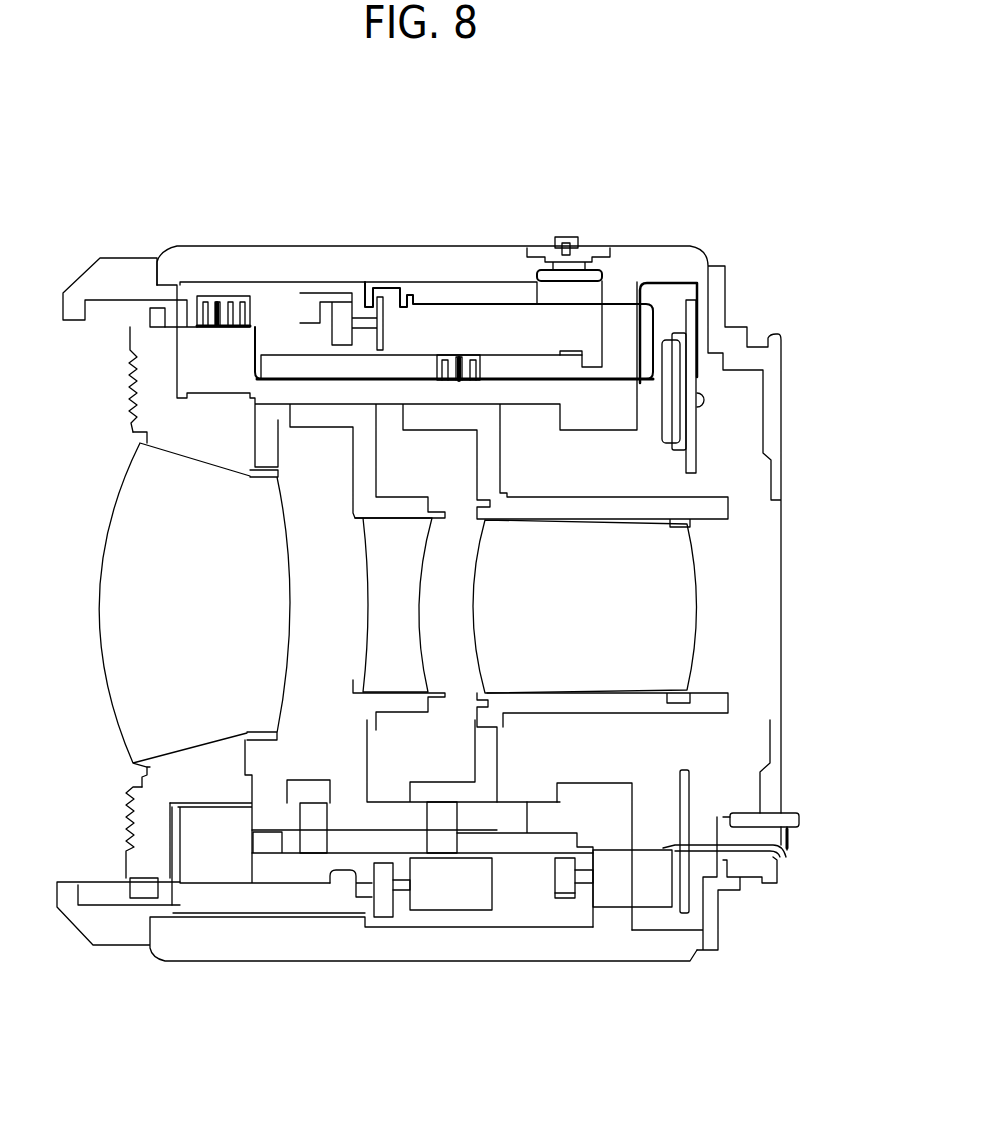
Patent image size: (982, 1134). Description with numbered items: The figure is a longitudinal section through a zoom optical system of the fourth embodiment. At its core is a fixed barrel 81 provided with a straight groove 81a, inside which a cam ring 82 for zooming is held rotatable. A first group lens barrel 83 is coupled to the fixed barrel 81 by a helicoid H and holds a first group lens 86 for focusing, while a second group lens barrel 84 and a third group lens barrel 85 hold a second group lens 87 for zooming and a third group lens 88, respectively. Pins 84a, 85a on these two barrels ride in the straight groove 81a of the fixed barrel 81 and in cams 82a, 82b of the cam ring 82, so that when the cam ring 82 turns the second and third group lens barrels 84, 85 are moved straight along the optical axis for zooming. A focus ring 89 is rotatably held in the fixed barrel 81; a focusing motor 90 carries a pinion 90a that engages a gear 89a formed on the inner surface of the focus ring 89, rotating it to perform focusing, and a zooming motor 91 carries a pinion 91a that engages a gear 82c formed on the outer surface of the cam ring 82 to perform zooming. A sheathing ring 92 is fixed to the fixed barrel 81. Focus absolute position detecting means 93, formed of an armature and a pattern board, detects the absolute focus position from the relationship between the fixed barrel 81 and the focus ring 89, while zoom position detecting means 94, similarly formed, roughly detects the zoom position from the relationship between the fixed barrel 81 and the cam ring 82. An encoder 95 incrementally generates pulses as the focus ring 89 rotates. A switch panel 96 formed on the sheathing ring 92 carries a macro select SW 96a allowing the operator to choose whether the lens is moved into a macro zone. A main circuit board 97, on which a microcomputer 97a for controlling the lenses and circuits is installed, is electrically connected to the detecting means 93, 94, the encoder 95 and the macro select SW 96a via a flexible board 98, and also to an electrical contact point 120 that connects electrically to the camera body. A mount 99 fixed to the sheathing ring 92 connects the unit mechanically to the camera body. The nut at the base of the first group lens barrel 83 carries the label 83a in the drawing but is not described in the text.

The fixed barrel 81 is at (230, 350).
The straight groove 81a is at (508, 810).
The cam ring 82 is at (512, 356).
The cam 82a is at (323, 840).
The cam 82b is at (450, 835).
The gear 82c is at (567, 351).
The first group lens barrel 83 is at (140, 835).
The nut 83a is at (137, 893).
The second group lens barrel 84 is at (297, 792).
The pin 84a is at (308, 838).
The third group lens barrel 85 is at (345, 872).
The pin 85a is at (433, 845).
The first group lens 86 is at (125, 553).
The second group lens 87 is at (205, 545).
The third group lens 88 is at (683, 572).
The focus ring 89 is at (120, 275).
The gear 89a is at (330, 884).
The focusing motor 90 is at (470, 898).
The pinion 90a is at (382, 893).
The zooming motor 91 is at (653, 897).
The pinion 91a is at (565, 897).
The sheathing ring 92 is at (322, 250).
The focus absolute position detecting means 93 is at (225, 300).
The zoom position detecting means 94 is at (456, 354).
The encoder 95 is at (373, 298).
The switch panel 96 is at (602, 290).
The macro select switch 96a is at (564, 240).
The main circuit board 97 is at (690, 360).
The microcomputer 97a is at (670, 350).
The flexible board 98 is at (653, 290).
The mount 99 is at (778, 352).
The electrical contact point 120 is at (786, 852).
The helicoid H is at (143, 781).